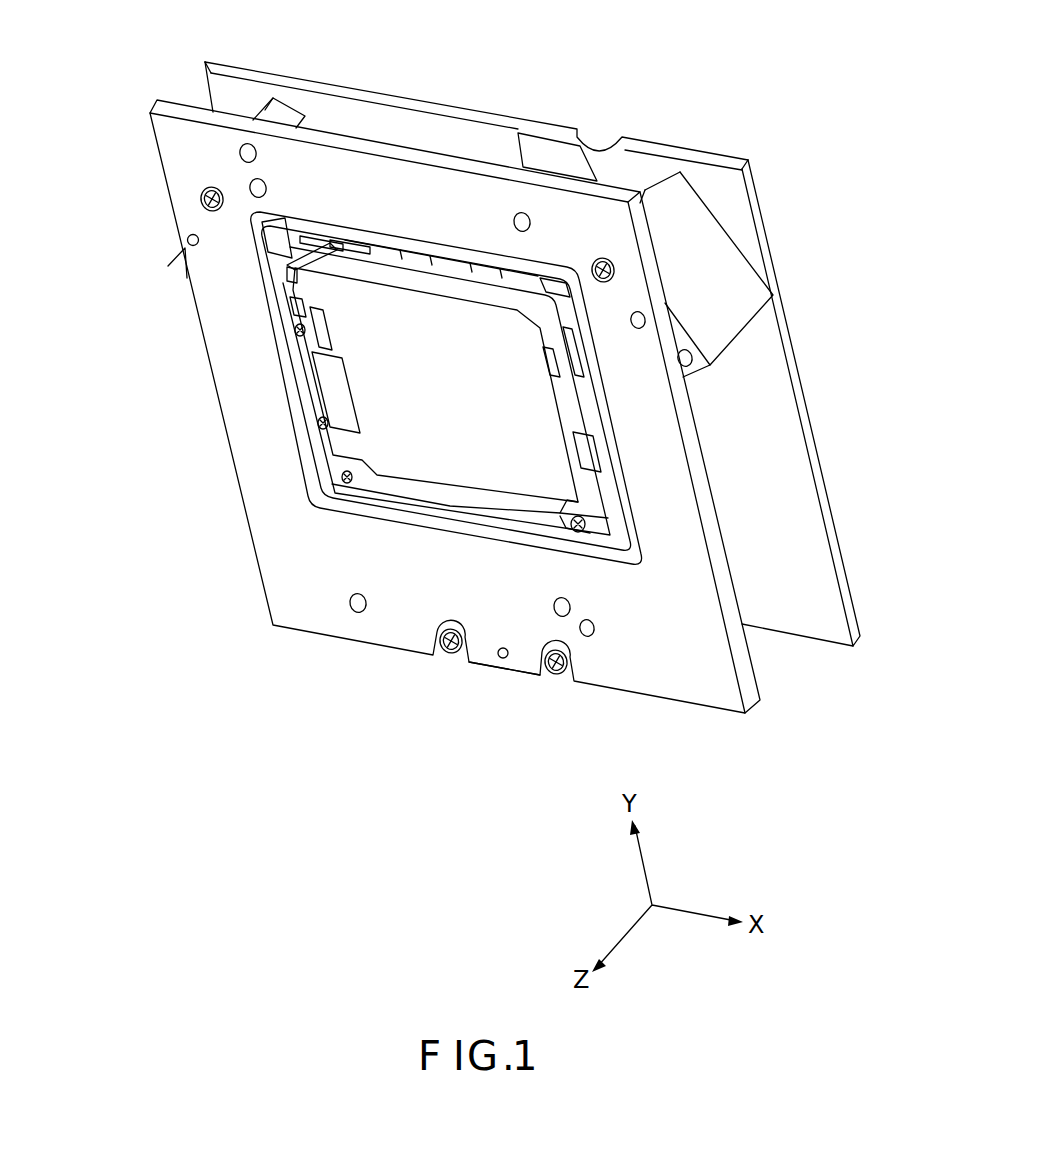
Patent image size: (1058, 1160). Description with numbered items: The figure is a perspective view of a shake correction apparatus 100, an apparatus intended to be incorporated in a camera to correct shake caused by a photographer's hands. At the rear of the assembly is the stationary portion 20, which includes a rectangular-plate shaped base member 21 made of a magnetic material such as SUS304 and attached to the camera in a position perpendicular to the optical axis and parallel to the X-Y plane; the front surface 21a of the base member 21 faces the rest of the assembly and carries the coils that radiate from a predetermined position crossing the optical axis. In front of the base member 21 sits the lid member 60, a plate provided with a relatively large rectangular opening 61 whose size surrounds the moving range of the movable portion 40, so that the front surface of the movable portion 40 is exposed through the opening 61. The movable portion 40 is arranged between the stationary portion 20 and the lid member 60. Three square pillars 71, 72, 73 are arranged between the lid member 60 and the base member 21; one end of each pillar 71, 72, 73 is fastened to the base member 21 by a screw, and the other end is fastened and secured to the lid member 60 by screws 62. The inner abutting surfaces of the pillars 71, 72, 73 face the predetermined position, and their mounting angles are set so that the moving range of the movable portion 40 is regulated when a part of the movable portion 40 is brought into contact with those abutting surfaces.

The shake correction apparatus 100 is at (496, 378).
The stationary portion 20 is at (485, 99).
The base member 21 is at (542, 333).
The front surface 21a is at (793, 461).
The movable portion 40 is at (306, 411).
The lid member 60 is at (436, 423).
The opening 61 is at (283, 360).
The screws 62 is at (200, 200).
The pillar 71 is at (279, 109).
The pillar 72 is at (728, 272).
The pillar 73 is at (485, 667).